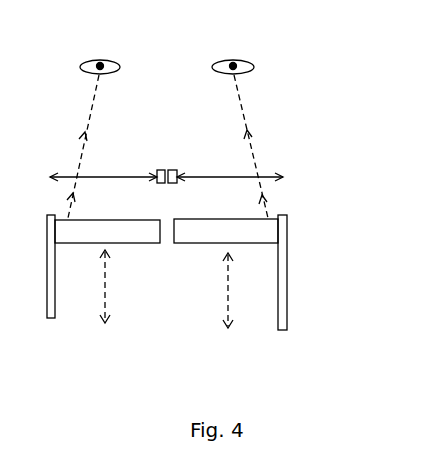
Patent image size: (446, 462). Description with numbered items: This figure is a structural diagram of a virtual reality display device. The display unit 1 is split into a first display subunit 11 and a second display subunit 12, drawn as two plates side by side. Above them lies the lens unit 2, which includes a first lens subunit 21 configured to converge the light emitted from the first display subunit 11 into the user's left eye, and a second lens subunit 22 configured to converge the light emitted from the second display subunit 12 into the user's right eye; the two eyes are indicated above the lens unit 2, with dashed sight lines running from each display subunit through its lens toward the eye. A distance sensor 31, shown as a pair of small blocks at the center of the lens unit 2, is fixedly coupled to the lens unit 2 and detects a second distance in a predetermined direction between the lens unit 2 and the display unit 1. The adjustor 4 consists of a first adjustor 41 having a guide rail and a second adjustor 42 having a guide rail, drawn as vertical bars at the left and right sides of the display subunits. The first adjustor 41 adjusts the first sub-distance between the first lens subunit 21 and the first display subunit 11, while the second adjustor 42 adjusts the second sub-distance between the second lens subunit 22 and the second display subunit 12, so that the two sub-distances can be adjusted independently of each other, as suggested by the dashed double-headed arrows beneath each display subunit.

The display unit 1 is at (211, 269).
The first display subunit 11 is at (132, 243).
The second display subunit 12 is at (207, 243).
The lens unit 2 is at (216, 149).
The first lens subunit 21 is at (65, 175).
The second lens subunit 22 is at (267, 173).
The distance sensor 31 is at (162, 170).
The adjustor 4 is at (214, 287).
The first adjustor 41 is at (55, 305).
The second adjustor 42 is at (287, 312).